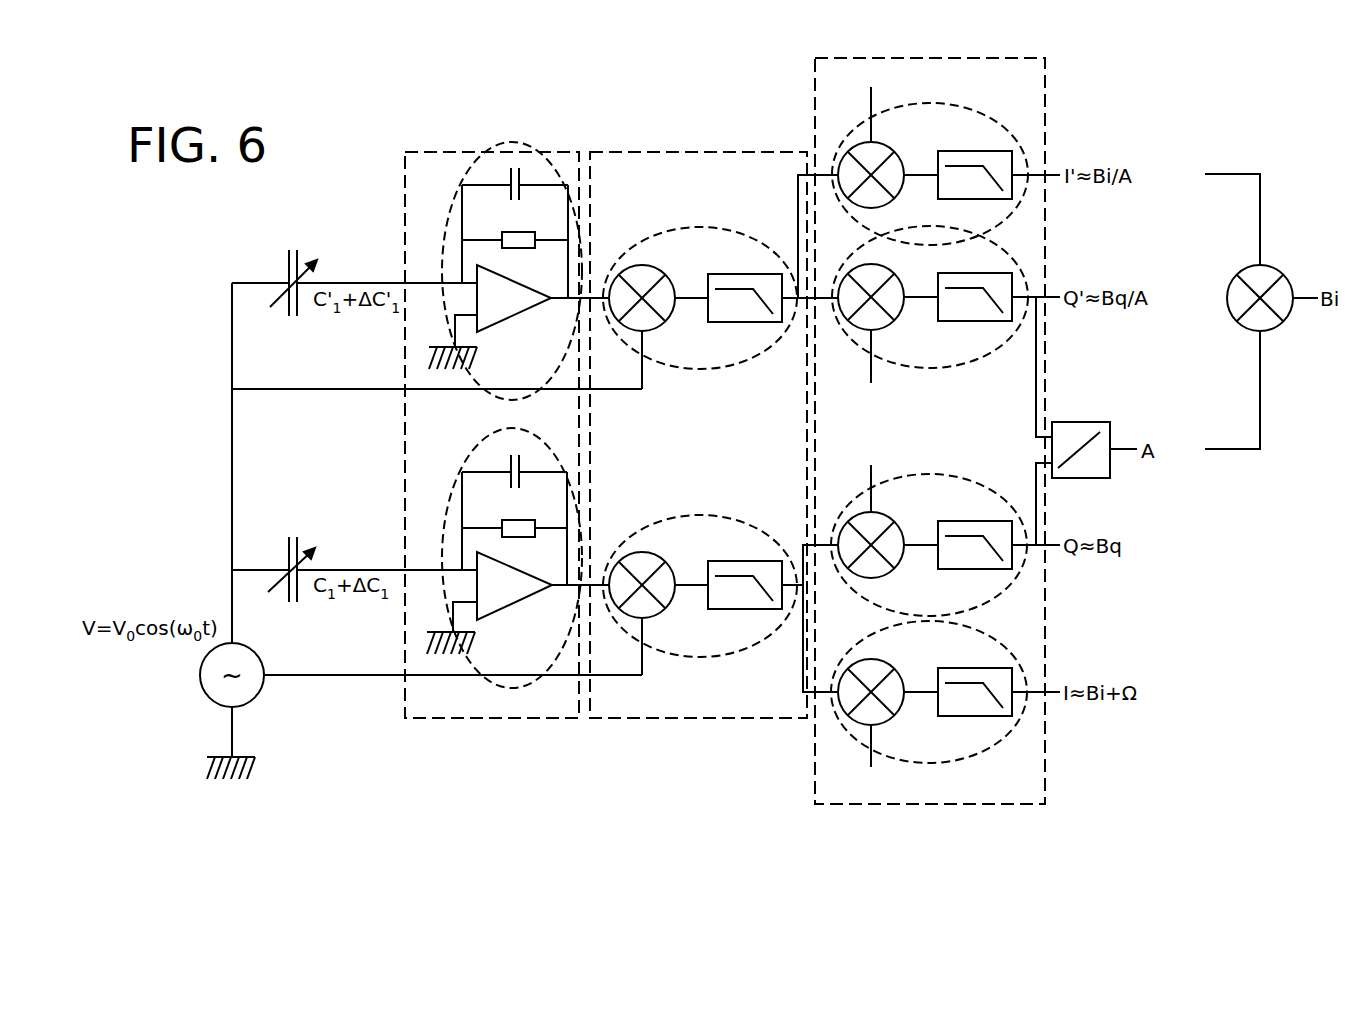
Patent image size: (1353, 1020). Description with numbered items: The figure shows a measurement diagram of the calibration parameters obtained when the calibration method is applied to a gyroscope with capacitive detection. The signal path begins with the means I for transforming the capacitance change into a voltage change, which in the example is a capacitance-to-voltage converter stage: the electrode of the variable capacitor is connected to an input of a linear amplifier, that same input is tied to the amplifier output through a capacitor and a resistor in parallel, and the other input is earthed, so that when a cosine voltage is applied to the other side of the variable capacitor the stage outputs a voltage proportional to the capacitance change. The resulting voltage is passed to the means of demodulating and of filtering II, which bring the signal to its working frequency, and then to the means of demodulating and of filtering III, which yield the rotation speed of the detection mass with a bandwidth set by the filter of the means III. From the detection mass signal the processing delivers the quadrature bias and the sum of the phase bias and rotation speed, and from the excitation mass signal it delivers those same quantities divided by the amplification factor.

The means for transforming the capacitance change into a voltage change I is at (396, 172).
The means of demodulating and of filtering II is at (655, 140).
The means of demodulating and of filtering III is at (1068, 89).